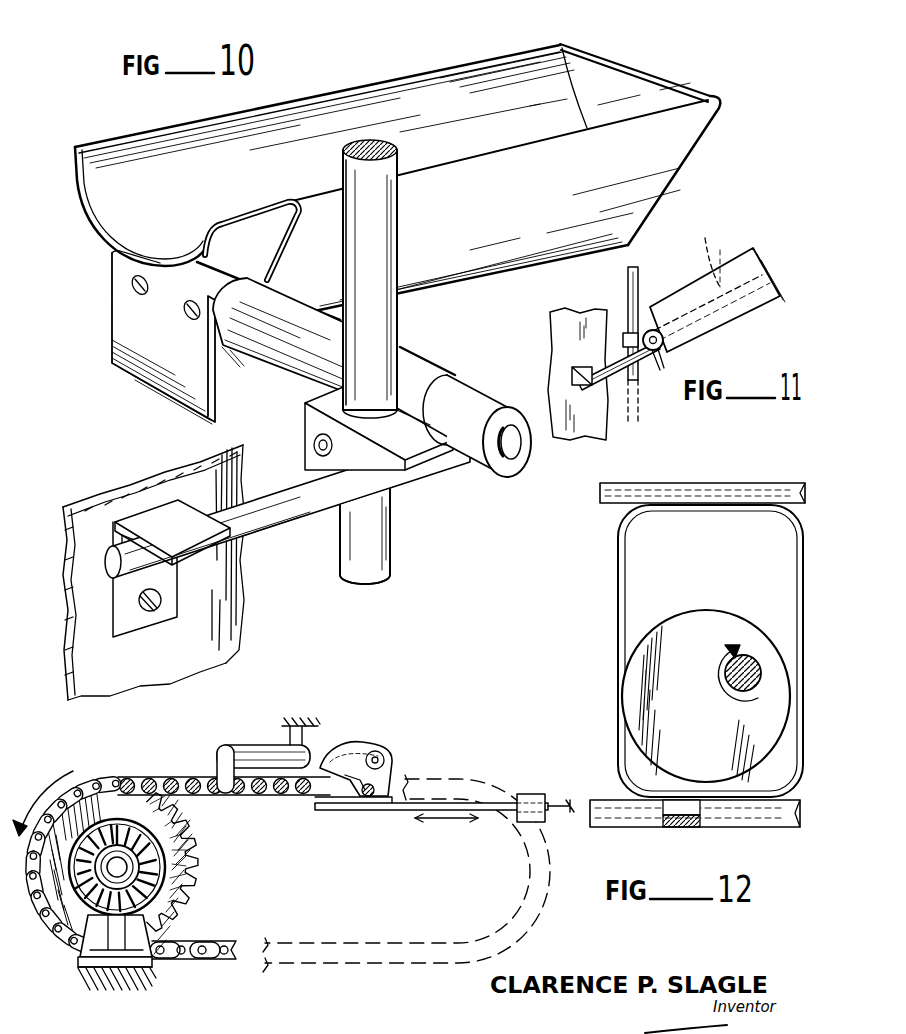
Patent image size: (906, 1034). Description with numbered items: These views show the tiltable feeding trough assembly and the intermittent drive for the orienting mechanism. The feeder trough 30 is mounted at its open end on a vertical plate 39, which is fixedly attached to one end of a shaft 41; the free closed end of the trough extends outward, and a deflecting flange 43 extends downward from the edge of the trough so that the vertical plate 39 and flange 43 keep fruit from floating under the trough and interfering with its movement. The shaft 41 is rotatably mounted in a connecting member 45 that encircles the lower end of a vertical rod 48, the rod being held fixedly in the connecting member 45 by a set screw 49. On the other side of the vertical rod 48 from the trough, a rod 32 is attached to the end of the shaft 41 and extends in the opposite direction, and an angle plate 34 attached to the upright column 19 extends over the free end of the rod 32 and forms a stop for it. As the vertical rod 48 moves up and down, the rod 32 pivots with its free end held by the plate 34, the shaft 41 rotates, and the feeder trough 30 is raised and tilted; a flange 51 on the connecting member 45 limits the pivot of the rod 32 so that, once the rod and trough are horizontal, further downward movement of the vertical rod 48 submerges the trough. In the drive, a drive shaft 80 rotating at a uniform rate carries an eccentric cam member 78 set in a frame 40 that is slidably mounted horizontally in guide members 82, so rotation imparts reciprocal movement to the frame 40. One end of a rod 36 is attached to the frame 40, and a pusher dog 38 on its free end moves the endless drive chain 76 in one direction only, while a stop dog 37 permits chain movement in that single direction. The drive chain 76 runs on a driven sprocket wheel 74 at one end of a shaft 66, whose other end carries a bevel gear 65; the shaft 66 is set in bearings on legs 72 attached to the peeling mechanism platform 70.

In FIG. 10, the upright column 19 is at (158, 663).
In FIG. 11, the upright column 19 is at (572, 332).
In FIG. 10, the feeder trough 30 is at (253, 183).
In FIG. 11, the feeder trough 30 is at (706, 252).
In FIG. 10, the rod 32 is at (322, 518).
In FIG. 11, the rod 32 is at (617, 375).
In FIG. 10, the angle plate 34 is at (182, 538).
In FIG. 11, the angle plate 34 is at (572, 372).
In FIG. 12, the rod 36 is at (433, 806).
In FIG. 12, the stop dog 37 is at (262, 755).
In FIG. 12, the pusher dog 38 is at (320, 757).
In FIG. 10, the vertical plate 39 is at (150, 364).
In FIG. 11, the vertical plate 39 is at (665, 355).
In FIG. 12, the frame 40 is at (622, 640).
In FIG. 10, the shaft 41 is at (487, 427).
In FIG. 10, the deflecting flange 43 is at (459, 258).
In FIG. 11, the deflecting flange 43 is at (735, 303).
In FIG. 10, the connecting member 45 is at (312, 357).
In FIG. 10, the vertical rod 48 is at (368, 545).
In FIG. 11, the vertical rod 48 is at (640, 283).
In FIG. 10, the set screw 49 is at (314, 447).
In FIG. 10, the flange 51 is at (425, 457).
In FIG. 11, the flange 51 is at (626, 333).
In FIG. 12, the bevel gear 65 is at (128, 868).
In FIG. 12, the shaft 66 is at (160, 886).
In FIG. 12, the peeling mechanism platform 70 is at (128, 978).
In FIG. 12, the legs 72 is at (98, 945).
In FIG. 12, the driven sprocket wheel 74 is at (170, 838).
In FIG. 12, the endless drive chain 76 is at (190, 958).
In FIG. 12, the cam member 78 is at (700, 703).
In FIG. 12, the drive shaft 80 is at (745, 655).
In FIG. 12, the guide members 82 is at (615, 803).